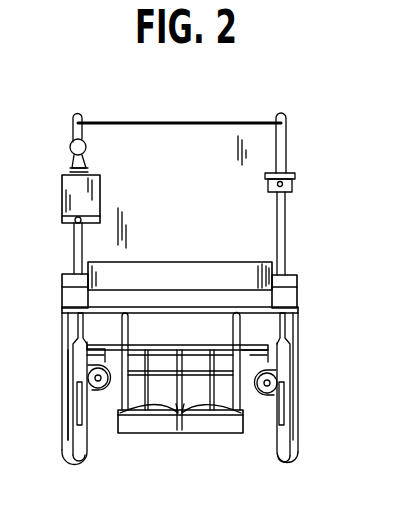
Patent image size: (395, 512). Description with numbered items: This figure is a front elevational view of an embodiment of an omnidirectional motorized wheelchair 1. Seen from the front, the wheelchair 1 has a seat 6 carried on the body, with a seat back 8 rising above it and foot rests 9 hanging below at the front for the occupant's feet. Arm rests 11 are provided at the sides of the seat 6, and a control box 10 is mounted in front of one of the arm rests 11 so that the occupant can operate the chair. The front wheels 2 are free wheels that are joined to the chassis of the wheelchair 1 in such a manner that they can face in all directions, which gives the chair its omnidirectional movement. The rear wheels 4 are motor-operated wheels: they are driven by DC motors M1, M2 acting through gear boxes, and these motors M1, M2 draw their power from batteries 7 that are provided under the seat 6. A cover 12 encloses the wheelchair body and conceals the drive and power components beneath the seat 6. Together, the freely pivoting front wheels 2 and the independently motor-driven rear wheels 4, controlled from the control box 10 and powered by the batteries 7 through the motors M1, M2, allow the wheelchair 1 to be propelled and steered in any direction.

The wheelchair 1 is at (255, 117).
The front wheels 2 is at (278, 448).
The rear wheels 4 is at (62, 432).
The seat 6 is at (235, 270).
The batteries 7 is at (198, 404).
The seat back 8 is at (188, 133).
The foot rests 9 is at (154, 428).
The control box 10 is at (72, 181).
The arm rests 11 is at (290, 172).
The cover 12 is at (287, 297).
The DC motor M1 is at (263, 397).
The DC motor M2 is at (105, 395).